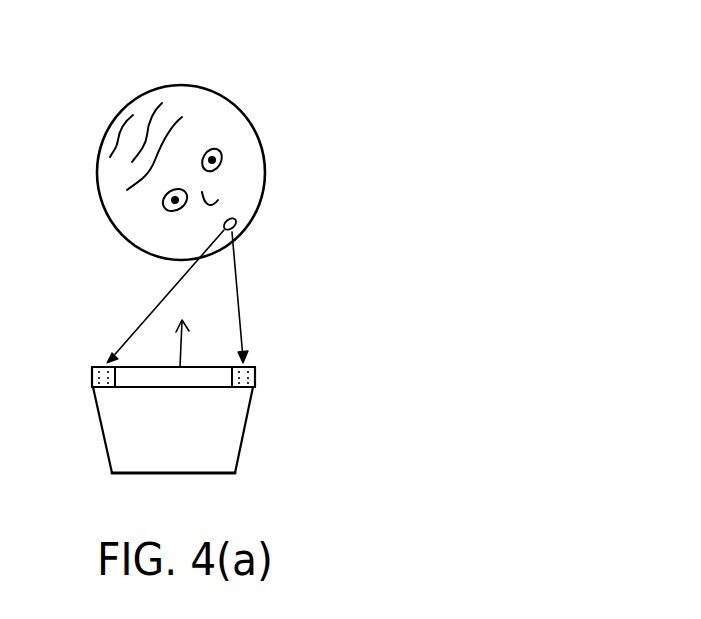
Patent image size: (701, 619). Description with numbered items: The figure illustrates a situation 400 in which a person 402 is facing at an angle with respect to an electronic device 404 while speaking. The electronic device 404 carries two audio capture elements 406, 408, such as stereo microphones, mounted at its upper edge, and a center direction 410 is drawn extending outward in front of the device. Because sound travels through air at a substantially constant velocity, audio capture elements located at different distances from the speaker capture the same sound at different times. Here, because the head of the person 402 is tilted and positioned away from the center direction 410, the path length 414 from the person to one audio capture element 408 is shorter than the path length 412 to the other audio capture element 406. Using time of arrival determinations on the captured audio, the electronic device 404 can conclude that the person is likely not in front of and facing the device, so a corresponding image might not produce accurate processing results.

The situation 400 is at (562, 91).
The person 402 is at (250, 118).
The electronic device 404 is at (242, 457).
The audio capture element 406 is at (92, 380).
The audio capture element 408 is at (255, 373).
The center direction 410 is at (200, 343).
The path length 412 is at (150, 308).
The path length 414 is at (240, 327).